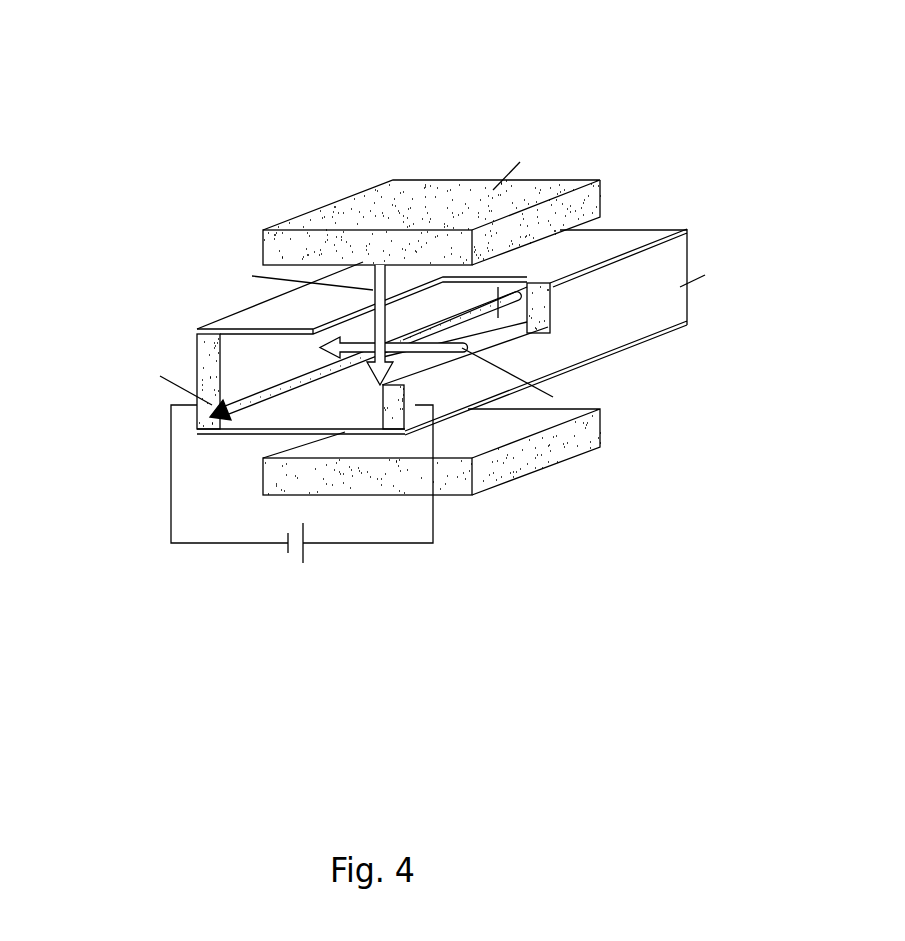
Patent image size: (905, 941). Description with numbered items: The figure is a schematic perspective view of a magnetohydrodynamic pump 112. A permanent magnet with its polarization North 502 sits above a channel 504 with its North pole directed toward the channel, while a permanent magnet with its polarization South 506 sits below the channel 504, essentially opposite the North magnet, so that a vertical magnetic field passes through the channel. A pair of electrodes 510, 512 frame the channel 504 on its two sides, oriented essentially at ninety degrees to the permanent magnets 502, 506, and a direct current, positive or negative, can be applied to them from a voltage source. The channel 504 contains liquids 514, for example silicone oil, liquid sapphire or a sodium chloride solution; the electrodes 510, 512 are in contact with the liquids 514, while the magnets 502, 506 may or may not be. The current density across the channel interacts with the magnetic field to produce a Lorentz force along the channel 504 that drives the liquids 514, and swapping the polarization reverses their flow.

The magnetohydrodynamic pump 112 is at (290, 114).
The permanent magnet with polarization North 502 is at (603, 217).
The channel 504 is at (310, 403).
The permanent magnet with polarization South 506 is at (530, 472).
The electrode 510 is at (688, 323).
The electrode 512 is at (197, 350).
The liquids 514 is at (298, 413).